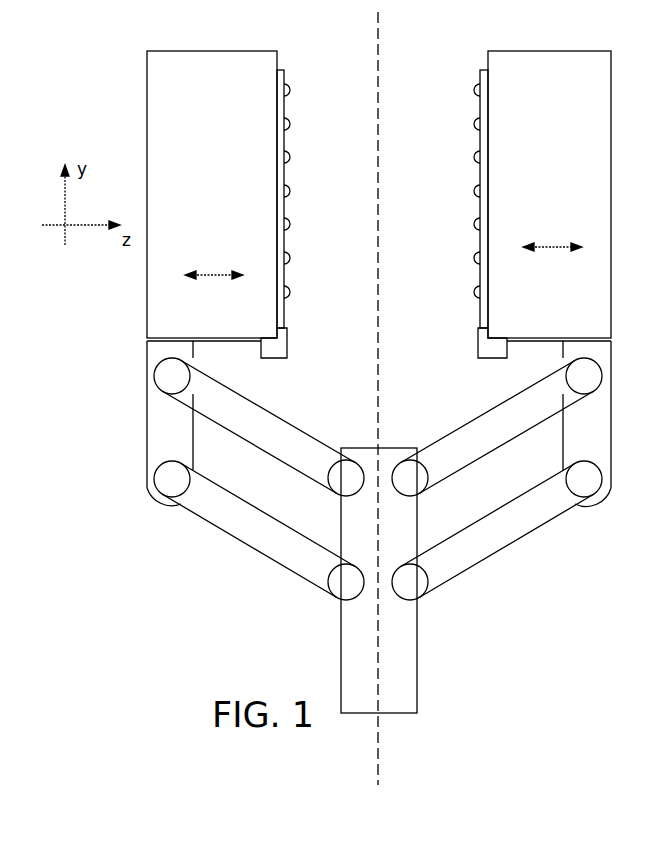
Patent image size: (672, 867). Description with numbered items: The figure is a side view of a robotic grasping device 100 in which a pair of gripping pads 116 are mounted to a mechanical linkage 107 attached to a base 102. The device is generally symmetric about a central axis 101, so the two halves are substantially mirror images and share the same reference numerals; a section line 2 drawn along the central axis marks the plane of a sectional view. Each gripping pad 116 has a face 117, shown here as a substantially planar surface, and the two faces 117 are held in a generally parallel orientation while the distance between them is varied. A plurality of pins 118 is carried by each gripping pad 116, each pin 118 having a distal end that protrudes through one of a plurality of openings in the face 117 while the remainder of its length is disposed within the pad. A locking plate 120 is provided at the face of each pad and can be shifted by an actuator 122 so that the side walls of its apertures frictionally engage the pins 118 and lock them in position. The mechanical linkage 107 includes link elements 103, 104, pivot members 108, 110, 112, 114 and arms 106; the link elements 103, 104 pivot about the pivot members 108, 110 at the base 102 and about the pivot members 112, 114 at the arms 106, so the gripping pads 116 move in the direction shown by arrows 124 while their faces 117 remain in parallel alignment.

The section line 2- 2 is at (378, 13).
The grasping device 100 is at (80, 116).
The central axis 101 is at (380, 733).
The base 102 is at (340, 660).
The link element 103 is at (378, 531).
The link element 104 is at (378, 427).
The arm 106 is at (379, 423).
The mechanical linkage 107 is at (185, 559).
The pivot member 108 is at (330, 598).
The pivot member 110 is at (340, 463).
The pivot member 112 is at (156, 500).
The pivot member 114 is at (155, 383).
The gripping pad 116 is at (379, 194).
The face 117 is at (284, 62).
The pin 118 is at (290, 226).
The locking plate 120 is at (289, 108).
The actuator 122 is at (288, 352).
The arrows 124 is at (213, 274).